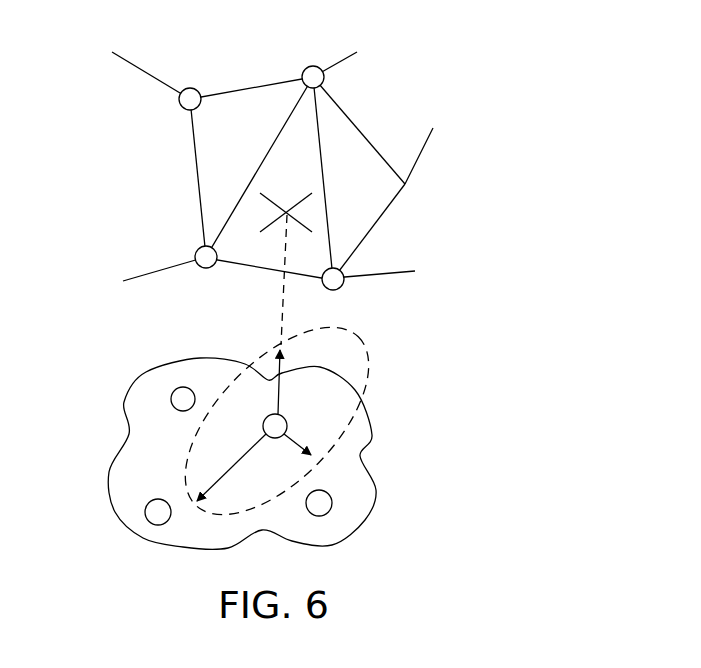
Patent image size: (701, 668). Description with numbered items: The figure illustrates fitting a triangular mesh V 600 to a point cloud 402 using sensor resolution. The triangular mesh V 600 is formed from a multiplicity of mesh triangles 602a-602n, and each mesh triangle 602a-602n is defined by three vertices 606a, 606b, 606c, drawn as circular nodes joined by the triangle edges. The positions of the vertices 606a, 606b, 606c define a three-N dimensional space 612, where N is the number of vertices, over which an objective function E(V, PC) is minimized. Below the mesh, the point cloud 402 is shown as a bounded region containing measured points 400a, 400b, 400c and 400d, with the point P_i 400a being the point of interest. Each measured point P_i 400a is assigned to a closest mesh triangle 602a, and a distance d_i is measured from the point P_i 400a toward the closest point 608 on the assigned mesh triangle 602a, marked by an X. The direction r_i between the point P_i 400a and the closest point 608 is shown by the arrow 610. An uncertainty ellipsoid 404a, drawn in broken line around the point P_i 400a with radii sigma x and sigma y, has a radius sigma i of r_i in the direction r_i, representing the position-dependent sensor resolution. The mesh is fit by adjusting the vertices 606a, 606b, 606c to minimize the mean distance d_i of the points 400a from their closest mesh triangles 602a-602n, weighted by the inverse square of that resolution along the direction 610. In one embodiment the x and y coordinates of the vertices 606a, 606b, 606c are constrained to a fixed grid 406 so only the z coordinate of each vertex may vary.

The triangular mesh V 600 is at (410, 95).
The 3N dimensional space 612 is at (168, 153).
The mesh triangle 602a is at (261, 163).
The mesh triangle 602n is at (390, 203).
The vertex 606a is at (197, 252).
The vertex 606b is at (341, 270).
The vertex 606c is at (312, 66).
The closest point 608 is at (290, 206).
The arrow 610 is at (291, 358).
The uncertainty ellipsoid 404a is at (373, 363).
The point cloud 402 is at (376, 489).
The fixed grid 406 is at (436, 455).
The measured point P_i 400a is at (270, 414).
The measured point 400b is at (158, 526).
The measured point 400c is at (333, 503).
The point 400d is at (176, 391).